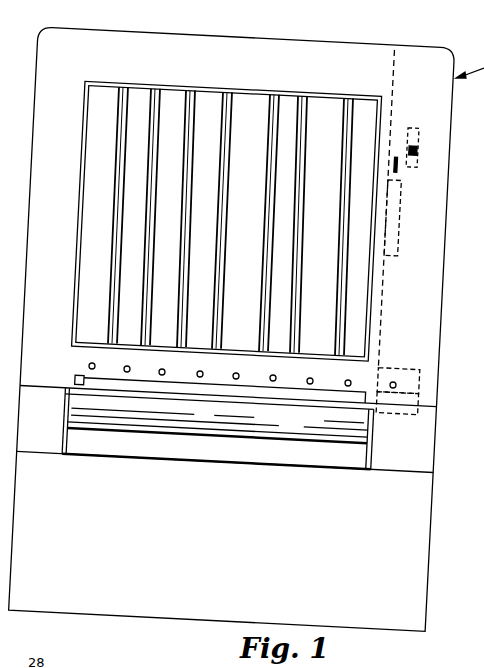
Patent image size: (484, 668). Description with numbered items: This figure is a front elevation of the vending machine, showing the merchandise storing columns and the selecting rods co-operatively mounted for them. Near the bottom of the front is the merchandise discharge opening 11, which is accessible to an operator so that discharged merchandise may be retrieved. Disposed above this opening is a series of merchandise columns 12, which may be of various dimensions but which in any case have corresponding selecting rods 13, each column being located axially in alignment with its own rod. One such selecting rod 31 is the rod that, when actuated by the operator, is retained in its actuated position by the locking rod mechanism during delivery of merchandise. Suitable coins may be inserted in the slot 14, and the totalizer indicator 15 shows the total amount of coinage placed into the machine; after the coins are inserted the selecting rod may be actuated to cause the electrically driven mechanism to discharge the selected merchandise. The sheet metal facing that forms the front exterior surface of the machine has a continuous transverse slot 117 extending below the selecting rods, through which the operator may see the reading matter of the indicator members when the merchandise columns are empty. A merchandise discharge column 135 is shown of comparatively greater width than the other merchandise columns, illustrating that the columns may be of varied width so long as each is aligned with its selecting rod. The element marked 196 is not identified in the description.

The merchandise discharge opening 11 is at (236, 447).
The merchandise columns 12 is at (352, 297).
The selecting rods 13 is at (354, 375).
The slot 14 is at (397, 166).
The totalizer indicator 15 is at (417, 150).
The selecting rod 31 is at (273, 376).
The continuous transverse slot 117 is at (76, 374).
The merchandise discharge column 135 is at (245, 97).
The grille bars 196 is at (198, 90).